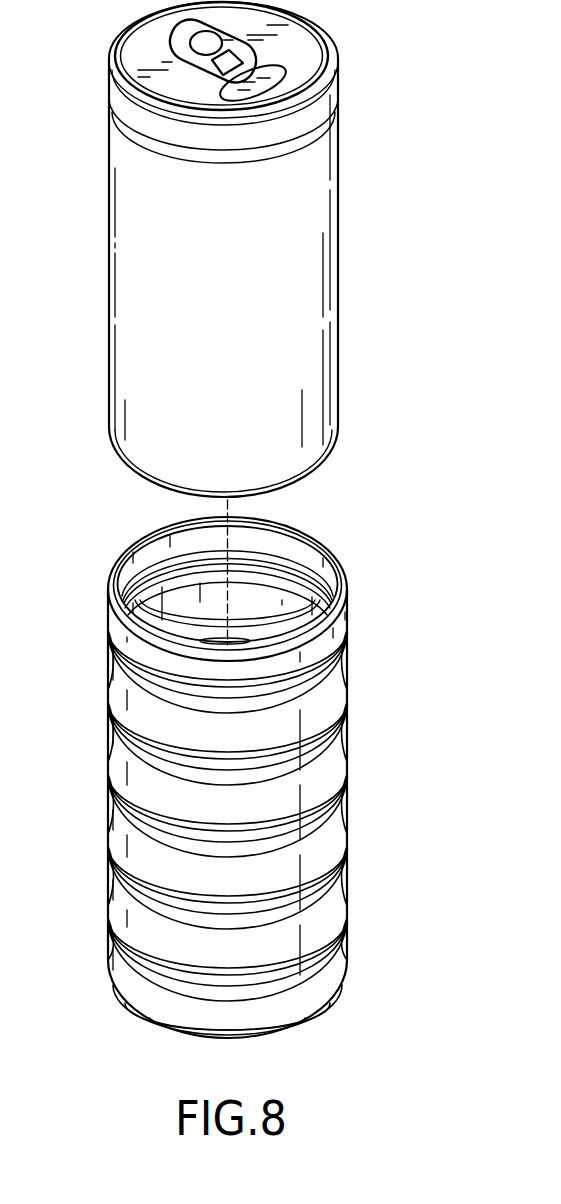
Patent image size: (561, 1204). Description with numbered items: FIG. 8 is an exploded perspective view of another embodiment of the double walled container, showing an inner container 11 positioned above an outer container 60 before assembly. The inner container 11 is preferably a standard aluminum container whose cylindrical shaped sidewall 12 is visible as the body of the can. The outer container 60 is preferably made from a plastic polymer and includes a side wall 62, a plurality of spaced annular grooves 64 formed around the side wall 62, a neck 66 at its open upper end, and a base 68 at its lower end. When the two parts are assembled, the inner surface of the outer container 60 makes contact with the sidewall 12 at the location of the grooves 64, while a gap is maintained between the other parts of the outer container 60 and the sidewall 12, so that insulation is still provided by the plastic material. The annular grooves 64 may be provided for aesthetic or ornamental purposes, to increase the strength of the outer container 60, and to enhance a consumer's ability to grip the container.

The inner container 11 is at (363, 206).
The sidewall 12 is at (223, 285).
The outer container 60 is at (410, 620).
The side wall 62 is at (342, 677).
The annular grooves 64 is at (338, 646).
The neck 66 is at (112, 597).
The base 68 is at (324, 1035).